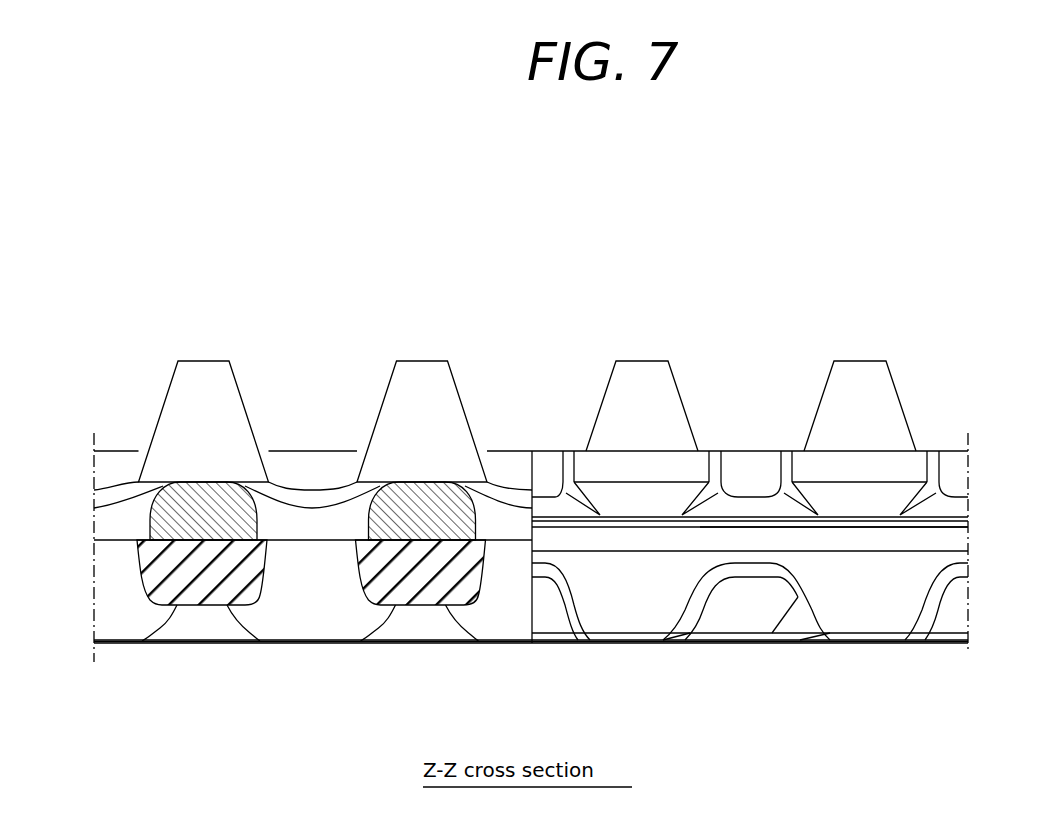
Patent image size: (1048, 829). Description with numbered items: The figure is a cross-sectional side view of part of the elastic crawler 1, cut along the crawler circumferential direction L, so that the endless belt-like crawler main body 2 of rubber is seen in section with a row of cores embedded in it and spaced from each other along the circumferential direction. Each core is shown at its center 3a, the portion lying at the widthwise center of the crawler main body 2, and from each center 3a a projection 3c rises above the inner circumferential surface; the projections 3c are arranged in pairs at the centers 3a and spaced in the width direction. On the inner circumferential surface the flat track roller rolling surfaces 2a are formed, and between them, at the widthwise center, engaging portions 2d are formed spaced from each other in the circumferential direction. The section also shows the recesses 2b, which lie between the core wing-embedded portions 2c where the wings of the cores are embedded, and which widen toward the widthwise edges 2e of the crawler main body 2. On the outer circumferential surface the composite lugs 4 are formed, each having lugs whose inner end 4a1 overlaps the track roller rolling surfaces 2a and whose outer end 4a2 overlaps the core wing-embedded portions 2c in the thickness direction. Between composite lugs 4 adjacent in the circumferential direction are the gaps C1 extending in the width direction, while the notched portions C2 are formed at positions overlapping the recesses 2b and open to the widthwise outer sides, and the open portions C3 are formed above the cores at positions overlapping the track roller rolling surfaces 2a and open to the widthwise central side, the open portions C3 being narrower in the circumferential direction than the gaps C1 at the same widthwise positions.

The elastic crawler 1 is at (758, 308).
The crawler main body 2 is at (952, 539).
The track roller rolling surface 2a is at (121, 451).
The recess 2b is at (548, 504).
The core wing-embedded portion 2c is at (640, 493).
The engaging portion 2d is at (117, 525).
The widthwise edge 2e is at (872, 528).
The center of core 3a is at (208, 517).
The projection 3c is at (202, 402).
The composite lug 4 is at (280, 646).
The inner end of lug 4a1 is at (113, 646).
The outer end of lug 4a2 is at (867, 646).
The gap C1 is at (543, 593).
The notched portion C2 is at (745, 590).
The open portion C3 is at (410, 617).
The crawler circumferential direction L is at (628, 255).